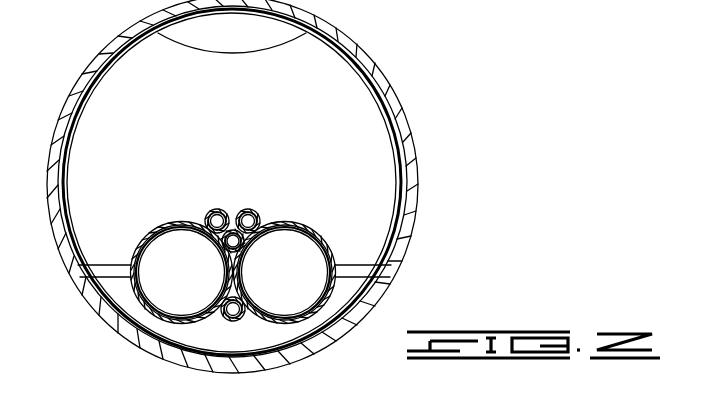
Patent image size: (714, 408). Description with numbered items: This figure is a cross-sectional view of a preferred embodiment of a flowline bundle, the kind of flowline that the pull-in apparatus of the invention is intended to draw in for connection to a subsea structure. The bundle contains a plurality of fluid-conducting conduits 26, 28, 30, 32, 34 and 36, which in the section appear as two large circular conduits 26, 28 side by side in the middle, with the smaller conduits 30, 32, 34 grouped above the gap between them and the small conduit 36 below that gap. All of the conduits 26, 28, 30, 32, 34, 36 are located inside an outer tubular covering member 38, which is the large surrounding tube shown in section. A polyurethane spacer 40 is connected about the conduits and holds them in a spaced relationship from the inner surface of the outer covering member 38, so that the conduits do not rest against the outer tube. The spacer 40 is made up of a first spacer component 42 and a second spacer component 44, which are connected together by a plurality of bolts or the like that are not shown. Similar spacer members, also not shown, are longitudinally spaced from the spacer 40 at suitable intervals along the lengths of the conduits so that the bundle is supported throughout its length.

The fluid-conducting conduit 26 is at (150, 315).
The fluid-conducting conduit 28 is at (293, 323).
The fluid-conducting conduit 30 is at (207, 213).
The fluid-conducting conduit 32 is at (232, 210).
The fluid-conducting conduit 34 is at (258, 211).
The fluid-conducting conduit 36 is at (233, 321).
The outer tubular covering member 38 is at (395, 115).
The polyurethane spacer 40 is at (365, 152).
The first spacer component 42 is at (375, 200).
The second spacer component 44 is at (356, 288).